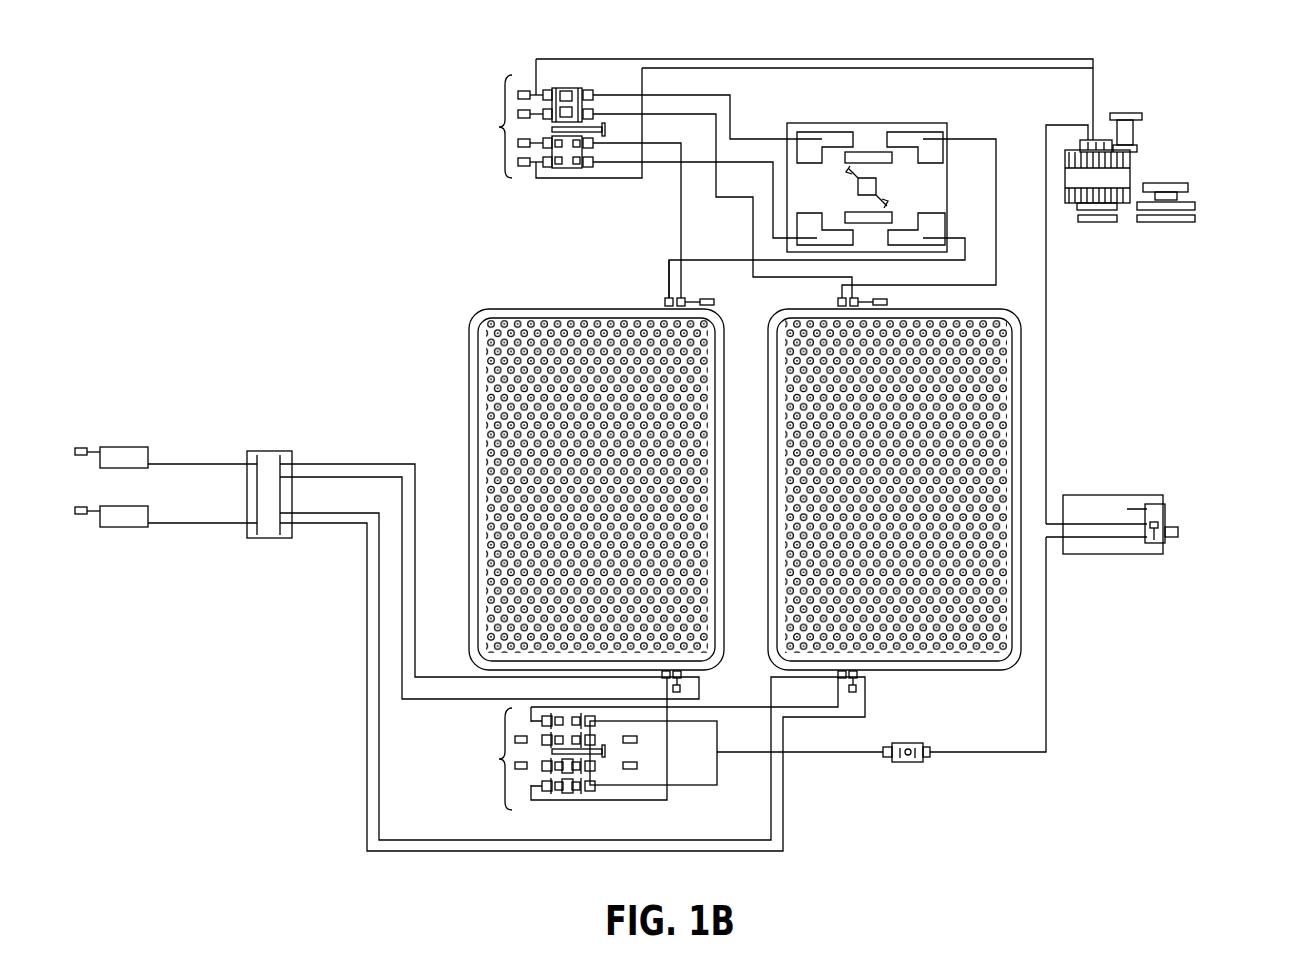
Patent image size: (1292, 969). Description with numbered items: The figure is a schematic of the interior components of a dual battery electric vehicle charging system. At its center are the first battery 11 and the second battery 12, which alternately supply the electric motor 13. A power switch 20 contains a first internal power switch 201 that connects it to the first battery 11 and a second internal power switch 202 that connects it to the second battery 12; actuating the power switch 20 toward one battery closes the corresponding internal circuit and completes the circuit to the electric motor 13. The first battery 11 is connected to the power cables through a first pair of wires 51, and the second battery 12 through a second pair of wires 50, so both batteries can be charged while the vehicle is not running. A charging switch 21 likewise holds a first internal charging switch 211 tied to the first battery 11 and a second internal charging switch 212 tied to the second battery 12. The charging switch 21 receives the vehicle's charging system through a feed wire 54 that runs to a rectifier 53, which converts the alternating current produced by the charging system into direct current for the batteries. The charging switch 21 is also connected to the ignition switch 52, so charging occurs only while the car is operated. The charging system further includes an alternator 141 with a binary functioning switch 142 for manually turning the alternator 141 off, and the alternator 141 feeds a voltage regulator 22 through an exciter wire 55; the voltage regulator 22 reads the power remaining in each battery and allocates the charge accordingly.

The first battery 11 is at (512, 309).
The second battery 12 is at (1022, 372).
The electric motor 13 is at (270, 540).
The power switch 20 is at (655, 785).
The first internal power switch 201 is at (572, 800).
The second internal power switch 202 is at (590, 757).
The charging switch 21 is at (660, 156).
The first internal charging switch 211 is at (585, 178).
The second internal charging switch 212 is at (570, 88).
The voltage regulator 22 is at (903, 762).
The second pair of wires 50 is at (345, 523).
The first pair of wires 51 is at (350, 463).
The ignition switch 52 is at (867, 123).
The rectifier 53 is at (1133, 138).
The feed wire 54 is at (1095, 90).
The exciter wire 55 is at (1045, 698).
The alternator 141 is at (1102, 495).
The binary functioning switch 142 is at (1167, 518).